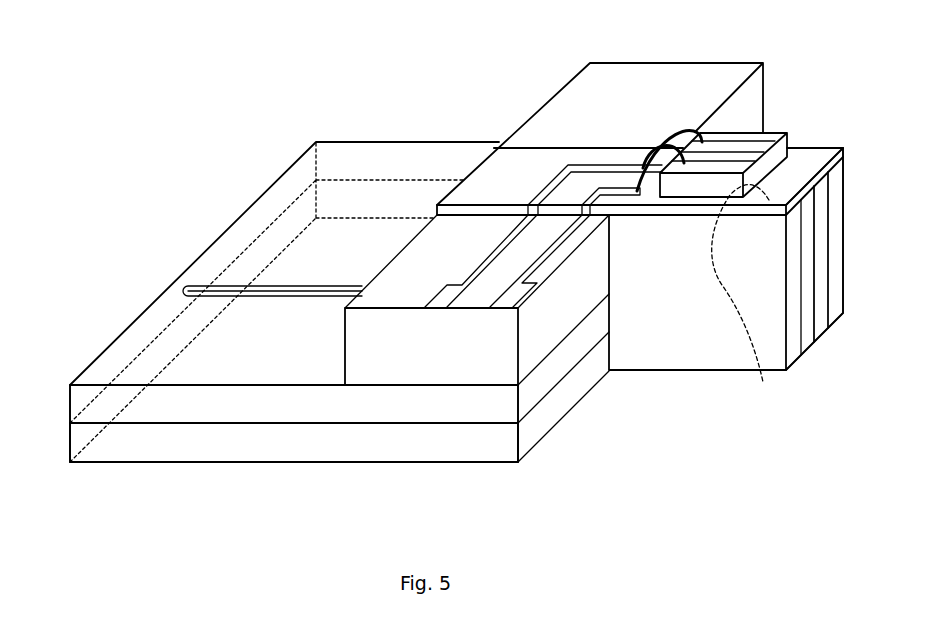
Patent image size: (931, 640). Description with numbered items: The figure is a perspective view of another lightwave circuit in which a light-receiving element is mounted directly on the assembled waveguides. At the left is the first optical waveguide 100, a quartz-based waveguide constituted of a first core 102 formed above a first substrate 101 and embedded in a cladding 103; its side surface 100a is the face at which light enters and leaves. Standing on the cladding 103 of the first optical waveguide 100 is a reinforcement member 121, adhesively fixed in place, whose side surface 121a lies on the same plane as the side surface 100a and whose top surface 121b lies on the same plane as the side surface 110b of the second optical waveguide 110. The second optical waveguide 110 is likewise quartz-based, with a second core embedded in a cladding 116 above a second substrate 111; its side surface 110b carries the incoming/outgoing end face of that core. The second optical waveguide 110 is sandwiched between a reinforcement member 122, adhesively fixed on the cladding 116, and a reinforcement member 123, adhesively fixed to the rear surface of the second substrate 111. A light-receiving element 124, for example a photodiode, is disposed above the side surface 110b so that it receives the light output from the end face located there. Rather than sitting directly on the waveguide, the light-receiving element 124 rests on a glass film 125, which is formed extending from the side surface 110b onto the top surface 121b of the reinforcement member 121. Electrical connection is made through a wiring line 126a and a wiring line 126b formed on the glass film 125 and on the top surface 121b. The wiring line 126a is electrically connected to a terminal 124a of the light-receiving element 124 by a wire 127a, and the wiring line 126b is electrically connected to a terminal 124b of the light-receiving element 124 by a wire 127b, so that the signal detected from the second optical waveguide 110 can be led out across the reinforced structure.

The first optical waveguide 100 is at (402, 134).
The side surface 100a is at (542, 388).
The first substrate 101 is at (70, 438).
The first core 102 is at (323, 283).
The cladding 103 is at (70, 404).
The second optical waveguide 110 is at (821, 352).
The side surface 110b is at (751, 297).
The second substrate 111 is at (826, 199).
The cladding 116 is at (808, 254).
The reinforcement member 121 is at (763, 66).
The side surface 121a is at (604, 378).
The top surface 121b is at (646, 108).
The reinforcement member 122 is at (706, 371).
The reinforcement member 123 is at (843, 318).
The light-receiving element 124 is at (771, 131).
The terminal 124a is at (735, 141).
The terminal 124b is at (696, 130).
The glass film 125 is at (817, 149).
The wiring line 126a is at (495, 203).
The wiring line 126b is at (538, 253).
The wire 127a is at (678, 131).
The wire 127b is at (660, 166).